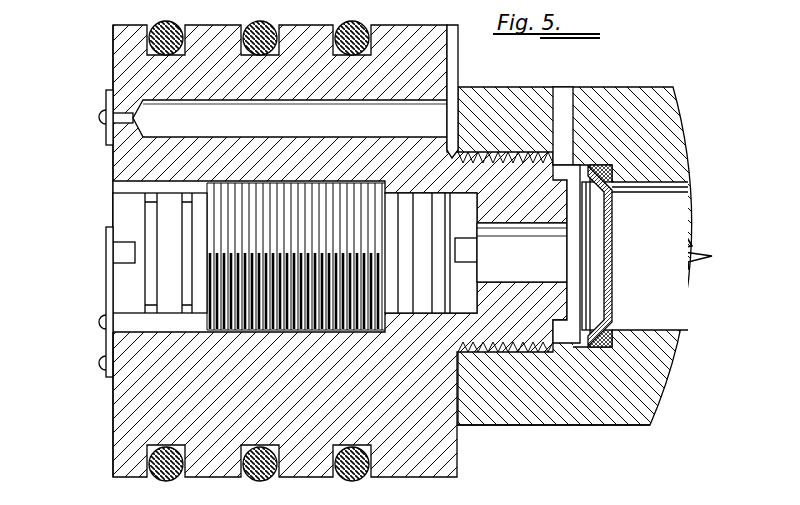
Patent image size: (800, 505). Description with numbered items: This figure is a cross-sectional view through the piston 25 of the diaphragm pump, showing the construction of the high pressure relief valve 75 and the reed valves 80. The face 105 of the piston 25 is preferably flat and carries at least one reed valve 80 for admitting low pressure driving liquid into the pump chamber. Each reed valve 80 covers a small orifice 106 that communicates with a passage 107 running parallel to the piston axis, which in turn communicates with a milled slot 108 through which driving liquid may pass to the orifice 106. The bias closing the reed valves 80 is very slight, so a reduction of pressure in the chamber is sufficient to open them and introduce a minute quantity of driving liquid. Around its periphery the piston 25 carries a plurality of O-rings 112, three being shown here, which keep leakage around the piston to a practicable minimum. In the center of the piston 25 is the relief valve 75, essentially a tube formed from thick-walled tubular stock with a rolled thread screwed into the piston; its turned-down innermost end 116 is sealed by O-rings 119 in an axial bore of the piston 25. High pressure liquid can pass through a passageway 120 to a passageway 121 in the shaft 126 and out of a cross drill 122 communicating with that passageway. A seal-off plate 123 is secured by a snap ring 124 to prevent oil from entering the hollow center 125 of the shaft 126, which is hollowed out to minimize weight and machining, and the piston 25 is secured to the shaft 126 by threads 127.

The piston 25 is at (66, 360).
The high pressure relief valve 75 is at (300, 186).
The reed valve 80 is at (106, 138).
The face 105 is at (113, 425).
The orifice 106 is at (113, 150).
The passage 107 is at (222, 128).
The milled slot 108 is at (455, 60).
The O-rings 112 is at (256, 483).
The end 116 is at (477, 273).
The O-rings 119 is at (423, 195).
The passageway 120 is at (522, 251).
The passageway 121 is at (575, 317).
The cross drill 122 is at (563, 95).
The seal-off plate 123 is at (612, 270).
The snap ring 124 is at (586, 232).
The hollow center 125 is at (668, 323).
The shaft 126 is at (650, 87).
The threads 127 is at (510, 420).